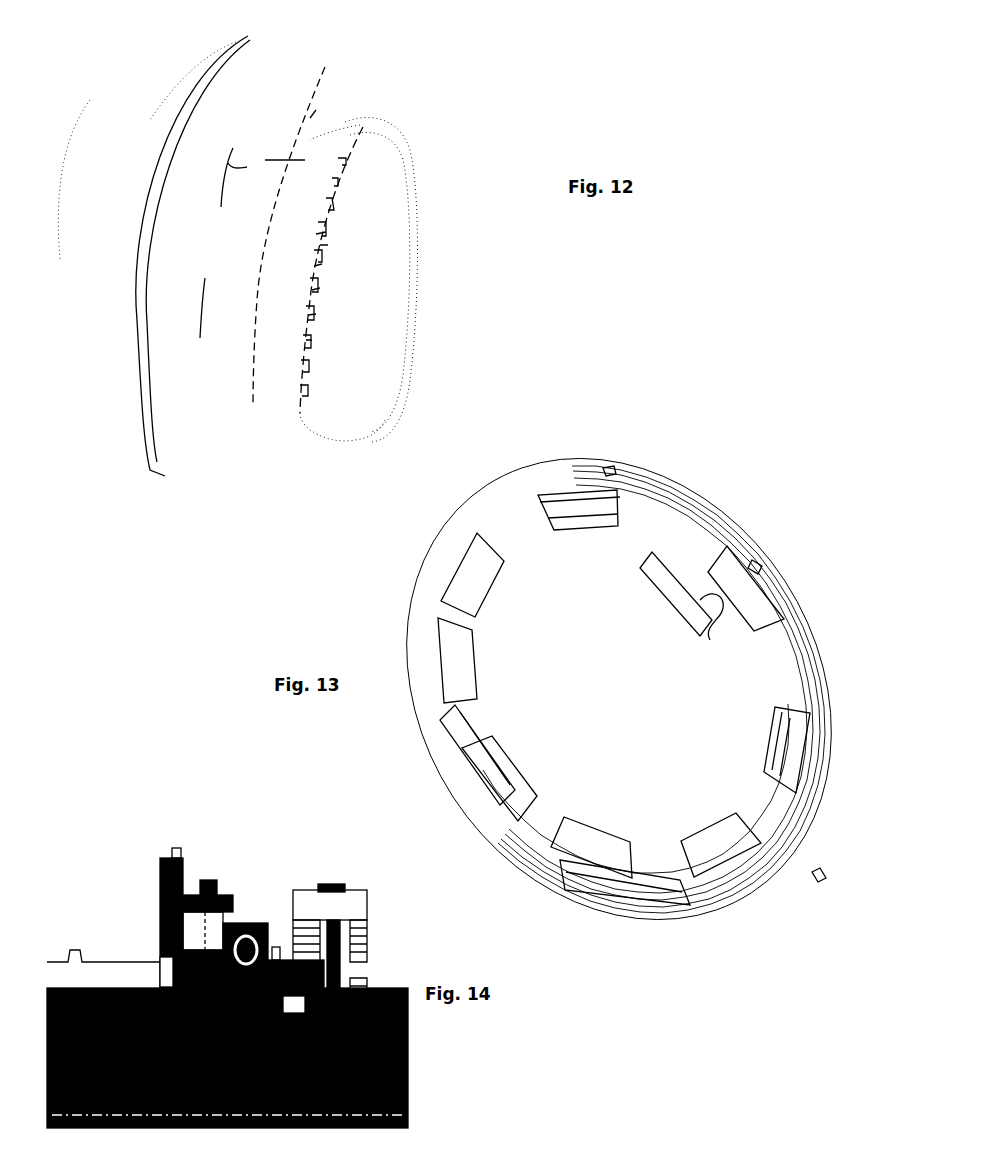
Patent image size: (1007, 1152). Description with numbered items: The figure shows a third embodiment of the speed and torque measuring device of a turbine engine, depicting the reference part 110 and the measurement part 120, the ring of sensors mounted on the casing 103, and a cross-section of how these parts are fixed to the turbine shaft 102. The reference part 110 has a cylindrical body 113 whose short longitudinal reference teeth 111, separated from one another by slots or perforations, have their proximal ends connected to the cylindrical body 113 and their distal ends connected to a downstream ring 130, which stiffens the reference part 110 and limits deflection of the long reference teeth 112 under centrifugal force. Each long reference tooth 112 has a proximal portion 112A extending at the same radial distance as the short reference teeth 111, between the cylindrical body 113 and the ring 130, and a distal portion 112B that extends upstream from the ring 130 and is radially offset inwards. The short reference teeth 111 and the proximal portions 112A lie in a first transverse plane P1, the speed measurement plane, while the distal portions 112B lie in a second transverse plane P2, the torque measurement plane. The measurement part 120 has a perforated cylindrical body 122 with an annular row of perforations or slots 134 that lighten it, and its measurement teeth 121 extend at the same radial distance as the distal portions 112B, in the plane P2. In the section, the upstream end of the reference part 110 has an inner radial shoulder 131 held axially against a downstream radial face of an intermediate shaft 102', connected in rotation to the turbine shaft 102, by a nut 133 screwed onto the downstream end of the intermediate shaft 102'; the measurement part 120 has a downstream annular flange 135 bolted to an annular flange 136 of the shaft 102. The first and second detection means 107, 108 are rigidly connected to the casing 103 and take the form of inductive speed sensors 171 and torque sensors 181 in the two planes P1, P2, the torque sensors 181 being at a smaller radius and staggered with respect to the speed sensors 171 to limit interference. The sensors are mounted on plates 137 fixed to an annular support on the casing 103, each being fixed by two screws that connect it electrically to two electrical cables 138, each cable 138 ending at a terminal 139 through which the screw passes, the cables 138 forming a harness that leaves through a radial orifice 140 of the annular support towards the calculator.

In FIG. 12, the turbine shaft 102 is at (468, 404).
In FIG. 14, the turbine shaft 102 is at (267, 1058).
In FIG. 14, the intermediate shaft 102' is at (97, 945).
In FIG. 13, the casing 103 is at (692, 500).
In FIG. 14, the casing 103 is at (155, 862).
In FIG. 13, the first detection means 107 is at (735, 735).
In FIG. 14, the first detection means 107 is at (213, 893).
In FIG. 13, the second detection means 108 is at (547, 696).
In FIG. 14, the second detection means 108 is at (253, 935).
In FIG. 12, the reference part 110 is at (407, 127).
In FIG. 13, the reference part 110 is at (680, 575).
In FIG. 14, the reference part 110 is at (165, 968).
In FIG. 12, the short longitudinal reference teeth 111 is at (317, 290).
In FIG. 12, the long longitudinal reference teeth 112 is at (294, 177).
In FIG. 12, the proximal portion 112A is at (335, 175).
In FIG. 12, the distal portion 112B is at (262, 383).
In FIG. 12, the cylindrical body 113 is at (370, 208).
In FIG. 12, the measurement part 120 is at (238, 414).
In FIG. 14, the measurement part 120 is at (275, 950).
In FIG. 12, the measurement teeth 121 is at (257, 302).
In FIG. 12, the cylindrical body 122 is at (218, 372).
In FIG. 12, the downstream ring 130 is at (335, 163).
In FIG. 14, the inner radial shoulder 131 is at (163, 955).
In FIG. 14, the nut 133 is at (337, 1008).
In FIG. 12, the perforations or slots 134 is at (213, 260).
In FIG. 12, the annular flange 135 is at (230, 60).
In FIG. 14, the annular flange 135 is at (322, 888).
In FIG. 12, the annular flange 136 is at (150, 461).
In FIG. 14, the annular flange 136 is at (348, 897).
In FIG. 13, the plates 137 is at (640, 538).
In FIG. 13, the electrical cables 138 is at (583, 503).
In FIG. 14, the electrical cables 138 is at (170, 852).
In FIG. 13, the terminal 139 is at (712, 637).
In FIG. 13, the radial orifice 140 is at (610, 465).
In FIG. 13, the inductive speed sensors 171 is at (625, 882).
In FIG. 13, the inductive torque sensors 181 is at (477, 755).
In FIG. 12, the first transverse plane P1 is at (362, 128).
In FIG. 14, the first transverse plane P1 is at (205, 905).
In FIG. 12, the second transverse plane P2 is at (326, 52).
In FIG. 14, the second transverse plane P2 is at (247, 917).